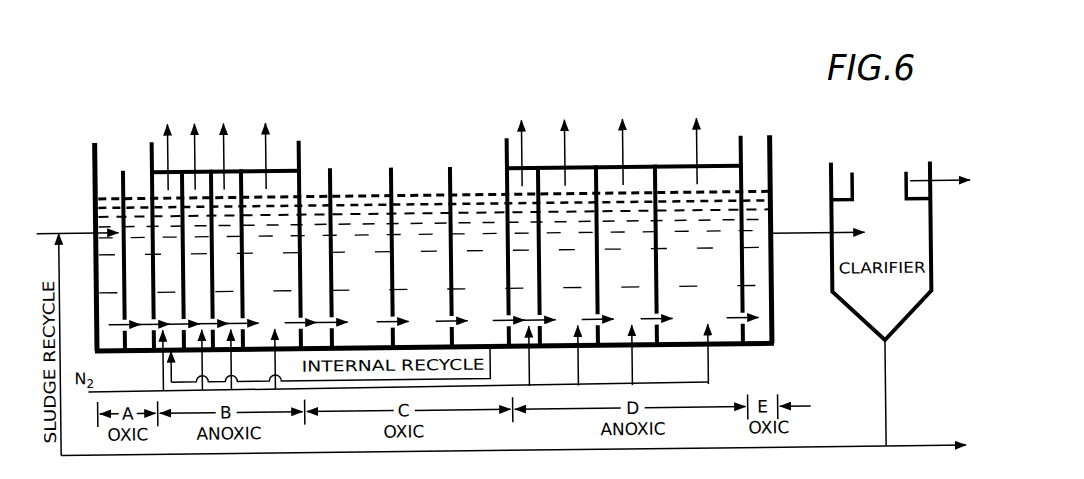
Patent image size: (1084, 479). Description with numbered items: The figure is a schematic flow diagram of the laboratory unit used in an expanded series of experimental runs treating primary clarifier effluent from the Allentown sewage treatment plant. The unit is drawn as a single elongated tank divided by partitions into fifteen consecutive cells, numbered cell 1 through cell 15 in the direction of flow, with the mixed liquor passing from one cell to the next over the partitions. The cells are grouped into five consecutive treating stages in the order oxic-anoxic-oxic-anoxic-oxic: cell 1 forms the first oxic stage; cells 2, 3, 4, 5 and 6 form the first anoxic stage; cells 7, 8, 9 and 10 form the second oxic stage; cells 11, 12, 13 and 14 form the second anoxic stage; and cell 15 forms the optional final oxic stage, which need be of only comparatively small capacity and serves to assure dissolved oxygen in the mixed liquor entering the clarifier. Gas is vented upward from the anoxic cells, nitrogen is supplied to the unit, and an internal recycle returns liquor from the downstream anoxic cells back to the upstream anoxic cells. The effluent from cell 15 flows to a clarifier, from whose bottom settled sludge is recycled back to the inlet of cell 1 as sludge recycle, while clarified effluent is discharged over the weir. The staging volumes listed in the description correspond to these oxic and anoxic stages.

The cell #1 (oxic zone A) 1 is at (121, 290).
The cell #2 (anoxic zone B) 2 is at (150, 290).
The cell #3 (anoxic zone B) 3 is at (179, 290).
The cell #4 (anoxic zone B) 4 is at (210, 289).
The cell #5 (anoxic zone B) 5 is at (239, 289).
The cell #6 (anoxic zone B) 6 is at (288, 289).
The cell #7 (oxic zone C) 7 is at (327, 288).
The cell #8 (oxic zone C) 8 is at (381, 288).
The cell #9 (oxic zone C) 9 is at (439, 288).
The cell #10 (oxic zone C) 10 is at (496, 287).
The cell #11 (anoxic zone D) 11 is at (538, 286).
The cell #12 (anoxic zone D) 12 is at (584, 286).
The cell #13 (anoxic zone D) 13 is at (643, 285).
The cell #14 (anoxic zone D) 14 is at (720, 284).
The cell #15 (oxic zone E) 15 is at (768, 282).